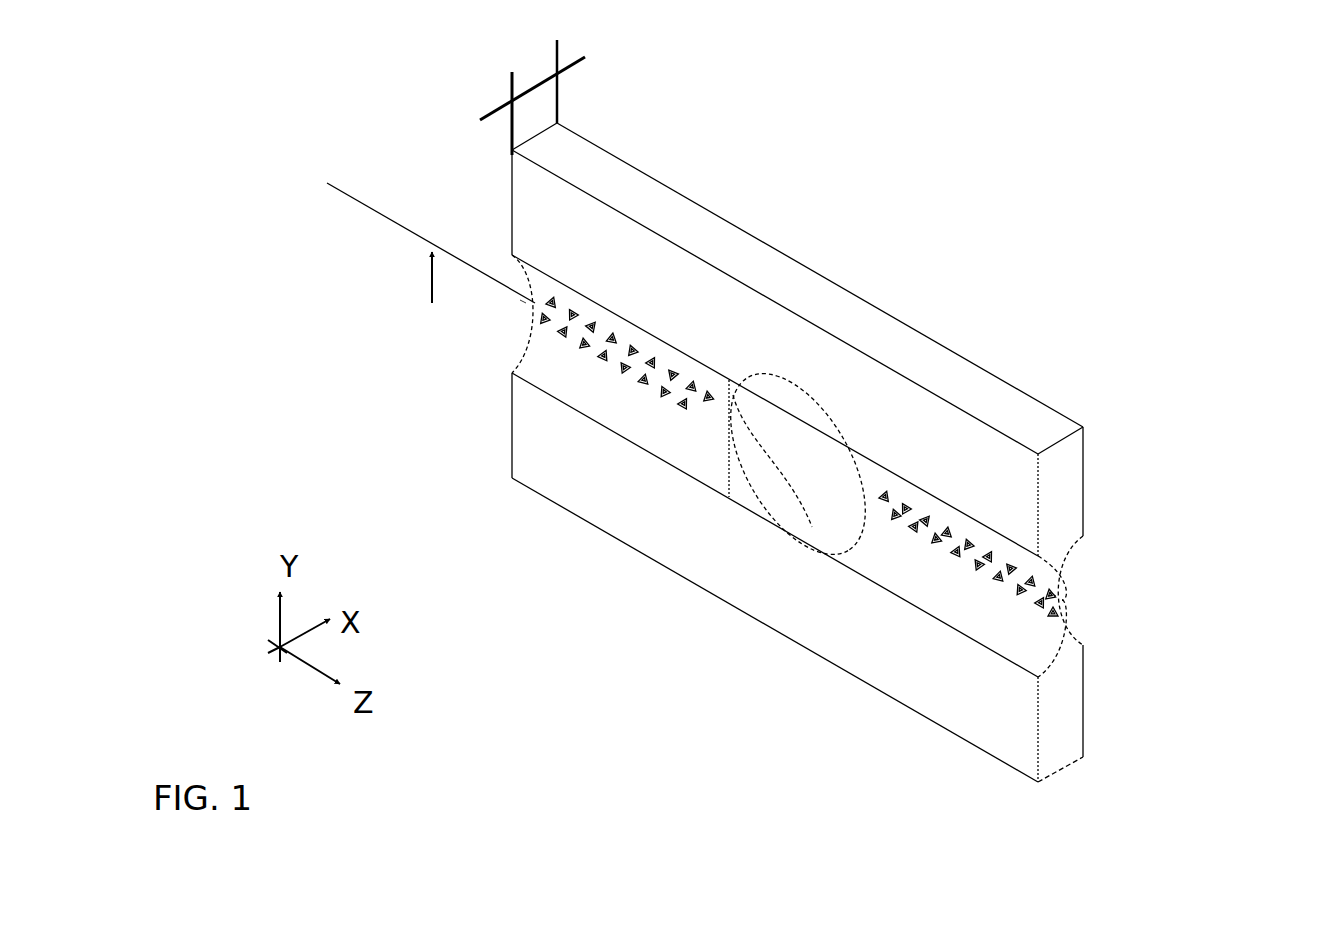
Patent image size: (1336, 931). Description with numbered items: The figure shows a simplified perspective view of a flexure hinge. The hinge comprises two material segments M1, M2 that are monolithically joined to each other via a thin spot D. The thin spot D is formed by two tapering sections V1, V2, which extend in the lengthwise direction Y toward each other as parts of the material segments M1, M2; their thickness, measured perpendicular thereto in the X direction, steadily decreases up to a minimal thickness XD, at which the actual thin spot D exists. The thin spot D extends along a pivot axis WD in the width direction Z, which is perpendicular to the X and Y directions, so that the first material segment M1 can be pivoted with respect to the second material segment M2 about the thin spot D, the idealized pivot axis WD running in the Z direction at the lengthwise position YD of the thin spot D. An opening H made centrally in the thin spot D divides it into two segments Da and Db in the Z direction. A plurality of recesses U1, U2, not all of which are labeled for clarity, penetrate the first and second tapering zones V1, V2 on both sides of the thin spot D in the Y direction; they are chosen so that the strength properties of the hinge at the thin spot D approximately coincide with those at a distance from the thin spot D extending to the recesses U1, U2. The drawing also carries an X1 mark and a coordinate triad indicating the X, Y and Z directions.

The first material segment M1 is at (1078, 465).
The second material segment M2 is at (1064, 721).
The first tapering section V1 is at (1068, 562).
The second tapering section V2 is at (1064, 649).
The thin spot D is at (1068, 601).
The opening H is at (798, 463).
The minimal thickness XD is at (778, 390).
The recesses U1 is at (668, 370).
The recesses U2 is at (619, 362).
The thin spot segment Da is at (567, 359).
The thin spot segment Db is at (919, 564).
The pivot axis WD is at (350, 198).
The lengthwise position of the thin spot YD is at (453, 296).
The reference axis position X1 is at (506, 97).